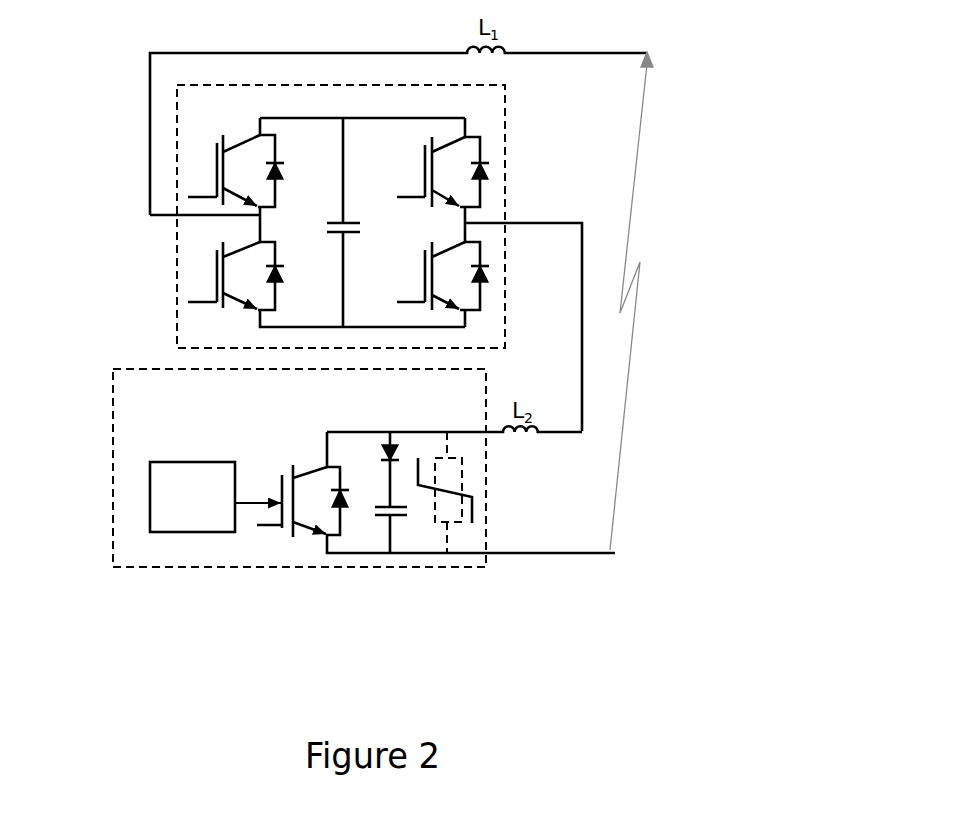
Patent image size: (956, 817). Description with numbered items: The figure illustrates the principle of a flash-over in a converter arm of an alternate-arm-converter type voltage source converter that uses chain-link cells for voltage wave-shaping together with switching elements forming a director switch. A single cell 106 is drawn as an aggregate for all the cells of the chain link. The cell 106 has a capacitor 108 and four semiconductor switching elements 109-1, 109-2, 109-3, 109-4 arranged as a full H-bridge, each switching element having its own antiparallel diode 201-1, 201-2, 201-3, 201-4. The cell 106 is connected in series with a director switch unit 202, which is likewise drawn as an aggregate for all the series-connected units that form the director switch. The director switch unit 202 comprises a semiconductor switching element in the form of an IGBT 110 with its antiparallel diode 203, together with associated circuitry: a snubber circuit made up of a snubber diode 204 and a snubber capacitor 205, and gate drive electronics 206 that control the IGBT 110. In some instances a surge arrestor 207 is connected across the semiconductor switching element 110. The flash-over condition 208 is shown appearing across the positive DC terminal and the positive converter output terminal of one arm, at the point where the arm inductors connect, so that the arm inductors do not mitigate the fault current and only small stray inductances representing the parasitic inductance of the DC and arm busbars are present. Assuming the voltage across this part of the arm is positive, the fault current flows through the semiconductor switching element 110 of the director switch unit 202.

The cell 106 is at (515, 117).
The capacitor 108 is at (344, 197).
The semiconductor switching element 109-1 is at (215, 168).
The semiconductor switching element 109-2 is at (217, 268).
The semiconductor switching element 109-3 is at (425, 172).
The semiconductor switching element 109-4 is at (425, 283).
The IGBT 110 is at (282, 488).
The antiparallel diode 201-1 is at (276, 178).
The antiparallel diode 201-2 is at (280, 283).
The antiparallel diode 201-3 is at (490, 177).
The antiparallel diode 201-4 is at (490, 277).
The director switch unit 202 is at (110, 428).
The antiparallel diode 203 is at (347, 491).
The snubber diode 204 is at (395, 450).
The snubber capacitor 205 is at (400, 520).
The gate drive electronics 206 is at (211, 513).
The surge arrestor 207 is at (463, 475).
The flash-over condition 208 is at (625, 418).